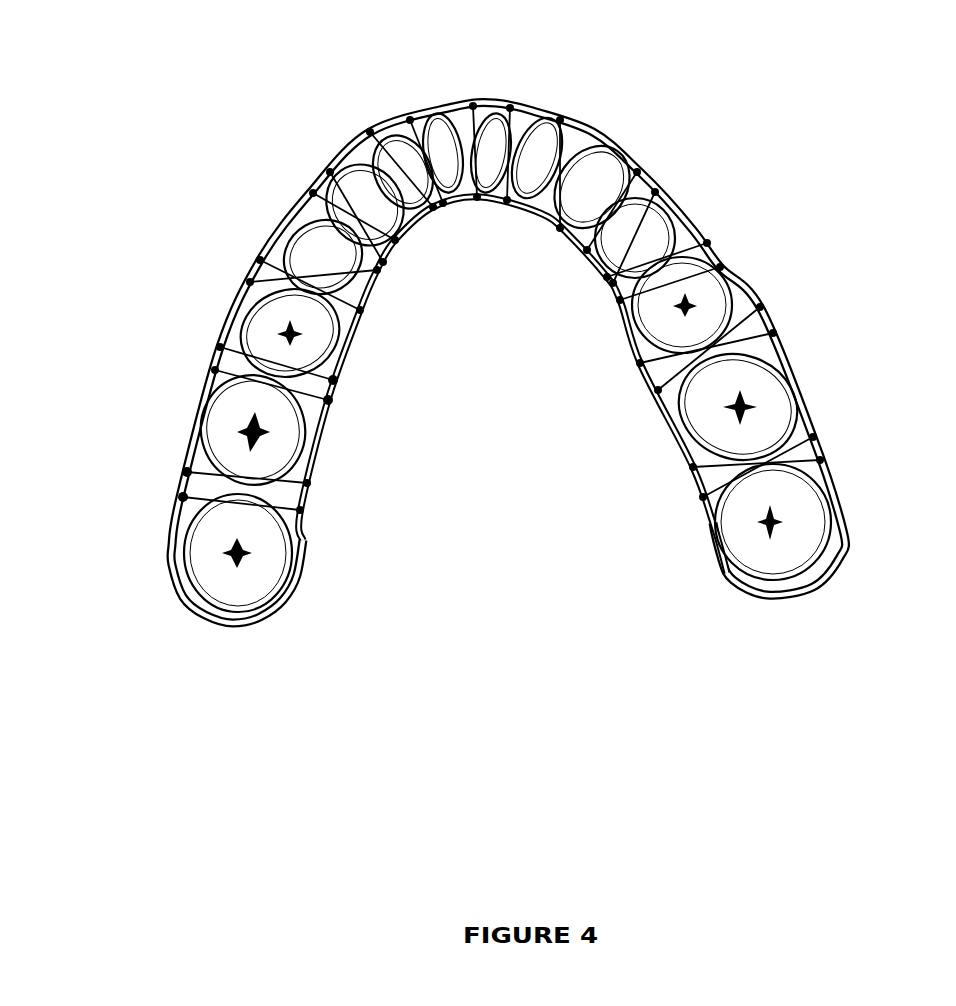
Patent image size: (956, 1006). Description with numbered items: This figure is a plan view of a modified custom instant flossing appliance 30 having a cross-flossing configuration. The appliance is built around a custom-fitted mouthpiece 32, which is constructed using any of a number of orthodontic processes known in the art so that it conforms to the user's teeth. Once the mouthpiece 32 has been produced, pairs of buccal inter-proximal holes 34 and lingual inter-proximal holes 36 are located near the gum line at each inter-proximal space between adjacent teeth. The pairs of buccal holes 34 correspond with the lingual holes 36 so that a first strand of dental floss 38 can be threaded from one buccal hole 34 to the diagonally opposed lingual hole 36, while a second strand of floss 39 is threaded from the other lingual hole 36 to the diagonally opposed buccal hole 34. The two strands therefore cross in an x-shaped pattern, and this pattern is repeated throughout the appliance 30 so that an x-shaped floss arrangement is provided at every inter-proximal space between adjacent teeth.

The custom instant flossing appliance 30 is at (332, 114).
The custom-fitted mouthpiece 32 is at (360, 200).
The buccal inter-proximal holes 34 is at (264, 260).
The lingual inter-proximal holes 36 is at (612, 282).
The first strand of dental floss 38 is at (190, 472).
The second strand of floss 39 is at (323, 433).